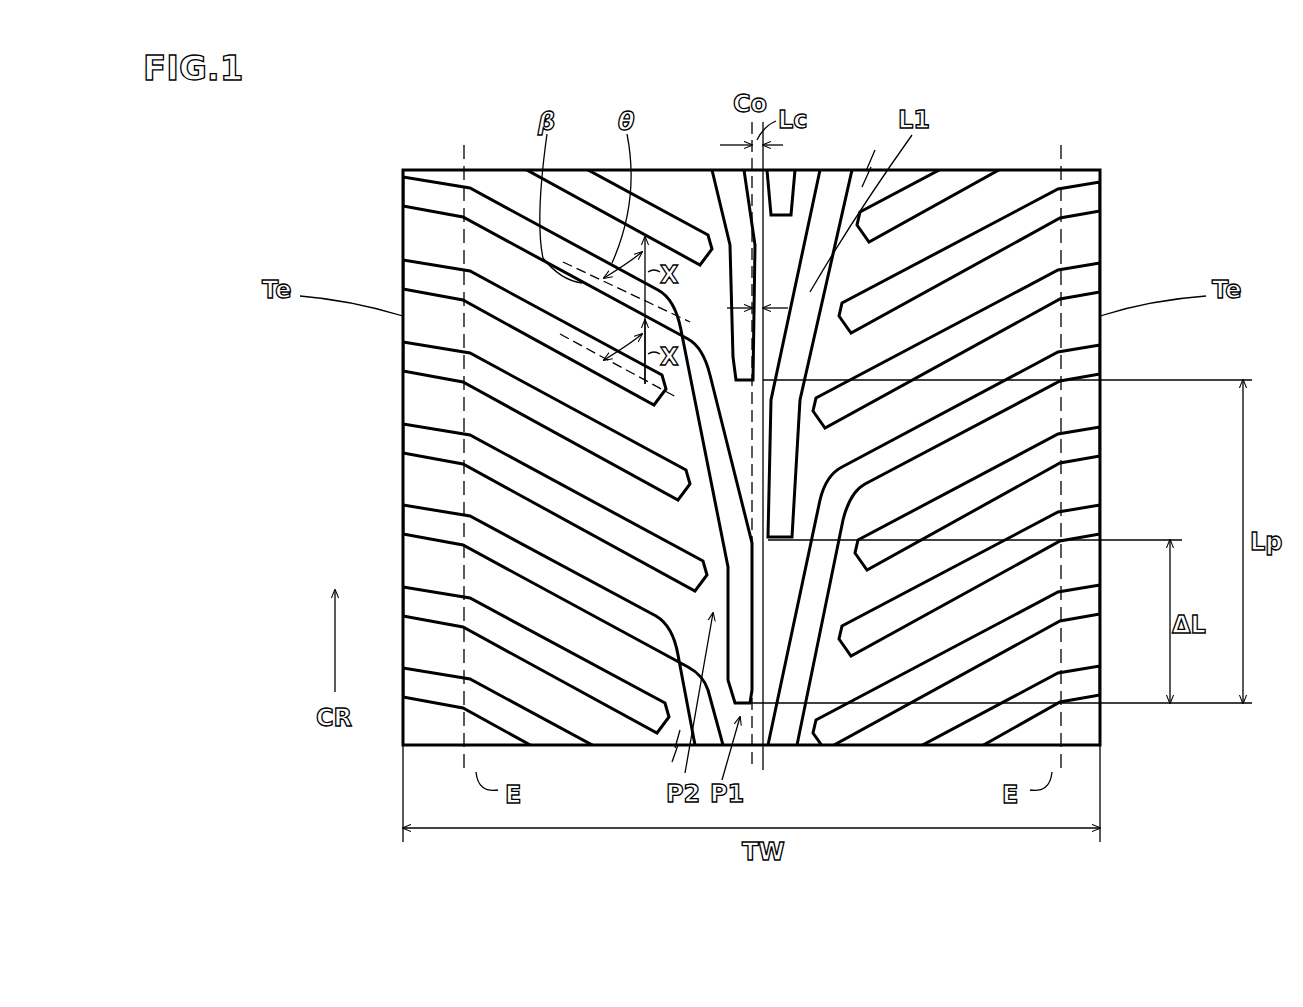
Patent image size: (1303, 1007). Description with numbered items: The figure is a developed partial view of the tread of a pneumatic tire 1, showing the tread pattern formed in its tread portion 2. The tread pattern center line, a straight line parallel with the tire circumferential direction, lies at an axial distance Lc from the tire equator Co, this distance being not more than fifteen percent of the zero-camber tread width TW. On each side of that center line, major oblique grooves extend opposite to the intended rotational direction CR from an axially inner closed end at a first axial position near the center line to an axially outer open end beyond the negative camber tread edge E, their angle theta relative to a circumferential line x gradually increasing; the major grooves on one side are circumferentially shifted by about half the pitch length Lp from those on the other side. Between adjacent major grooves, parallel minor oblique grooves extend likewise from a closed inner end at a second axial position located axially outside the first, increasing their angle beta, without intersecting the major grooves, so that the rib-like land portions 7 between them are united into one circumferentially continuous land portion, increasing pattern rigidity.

The pneumatic tire 1 is at (847, 457).
The tread portion 2 is at (751, 457).
The rib-like land portions 7 is at (612, 495).